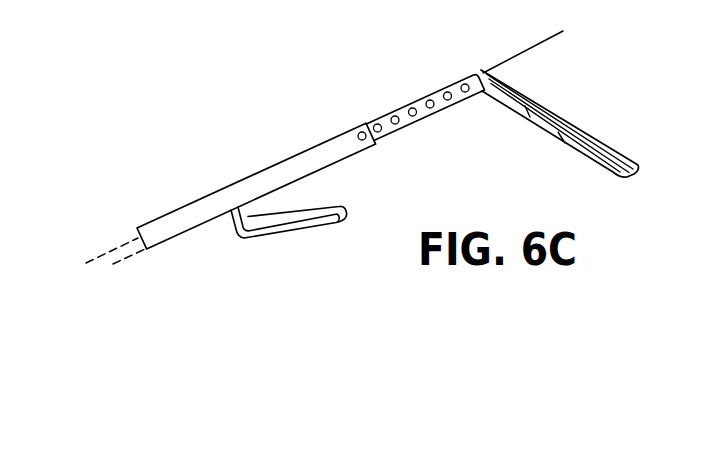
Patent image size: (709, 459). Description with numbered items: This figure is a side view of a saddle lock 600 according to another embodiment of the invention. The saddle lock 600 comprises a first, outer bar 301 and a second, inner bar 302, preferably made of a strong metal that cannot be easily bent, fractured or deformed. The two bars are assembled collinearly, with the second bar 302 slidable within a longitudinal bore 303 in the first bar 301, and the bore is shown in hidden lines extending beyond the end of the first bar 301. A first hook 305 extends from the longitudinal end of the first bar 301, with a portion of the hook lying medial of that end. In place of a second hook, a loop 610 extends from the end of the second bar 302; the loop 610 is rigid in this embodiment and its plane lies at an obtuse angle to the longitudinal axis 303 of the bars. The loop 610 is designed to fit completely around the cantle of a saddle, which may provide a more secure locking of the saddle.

The first, outer bar 301 is at (182, 227).
The second, inner bar 302 is at (432, 107).
The longitudinal bore 303 is at (80, 260).
The first hook 305 is at (287, 232).
The saddle lock 600 is at (607, 89).
The loop 610 is at (627, 160).